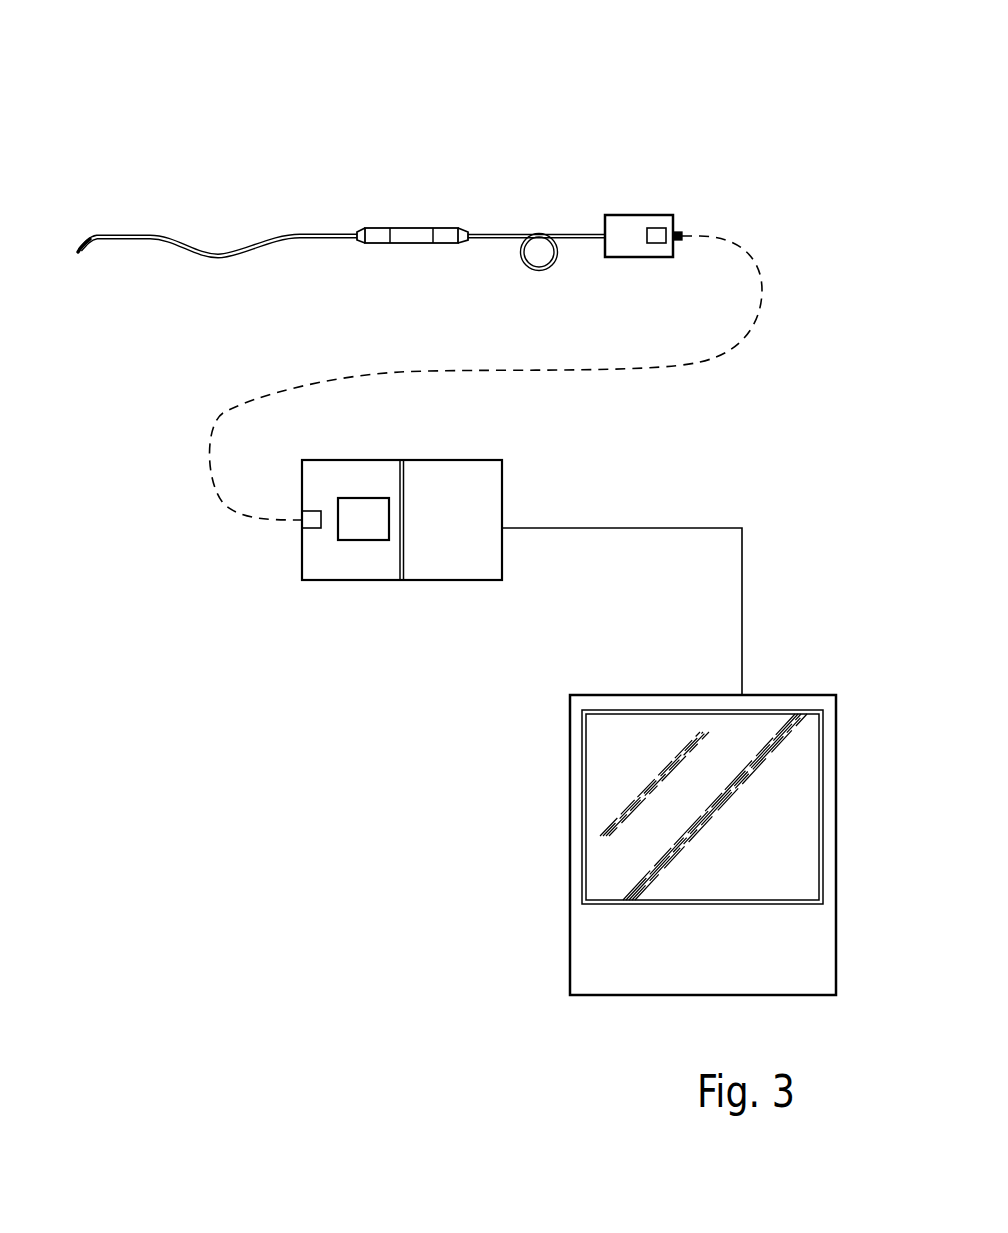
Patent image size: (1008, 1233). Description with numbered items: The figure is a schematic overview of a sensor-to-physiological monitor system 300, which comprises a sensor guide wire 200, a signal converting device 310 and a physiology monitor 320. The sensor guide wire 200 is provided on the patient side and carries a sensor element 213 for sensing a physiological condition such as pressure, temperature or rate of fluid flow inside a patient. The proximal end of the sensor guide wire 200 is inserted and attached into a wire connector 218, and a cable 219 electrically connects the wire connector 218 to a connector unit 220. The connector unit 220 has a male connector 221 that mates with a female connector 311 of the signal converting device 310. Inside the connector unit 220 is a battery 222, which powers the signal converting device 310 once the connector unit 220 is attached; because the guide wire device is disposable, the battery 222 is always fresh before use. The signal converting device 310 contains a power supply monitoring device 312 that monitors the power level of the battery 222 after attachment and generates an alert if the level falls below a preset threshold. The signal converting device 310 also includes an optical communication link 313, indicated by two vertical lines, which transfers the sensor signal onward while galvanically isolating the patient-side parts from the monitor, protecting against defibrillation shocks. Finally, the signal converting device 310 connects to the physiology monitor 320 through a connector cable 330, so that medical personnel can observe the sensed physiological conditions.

The sensor-to-physiological monitor system 300 is at (527, 122).
The sensor guide wire 200 is at (305, 232).
The sensor element 213 is at (79, 247).
The wire connector 218 is at (417, 228).
The cable 219 is at (518, 257).
The connector unit 220 is at (628, 214).
The male connector 221 is at (683, 231).
The battery 222 is at (658, 237).
The signal converting device 310 is at (458, 460).
The female connector 311 is at (308, 533).
The power supply monitoring device 312 is at (372, 520).
The optical communication link 313 is at (405, 497).
The physiology monitor 320 is at (570, 775).
The connector cable 330 is at (743, 621).